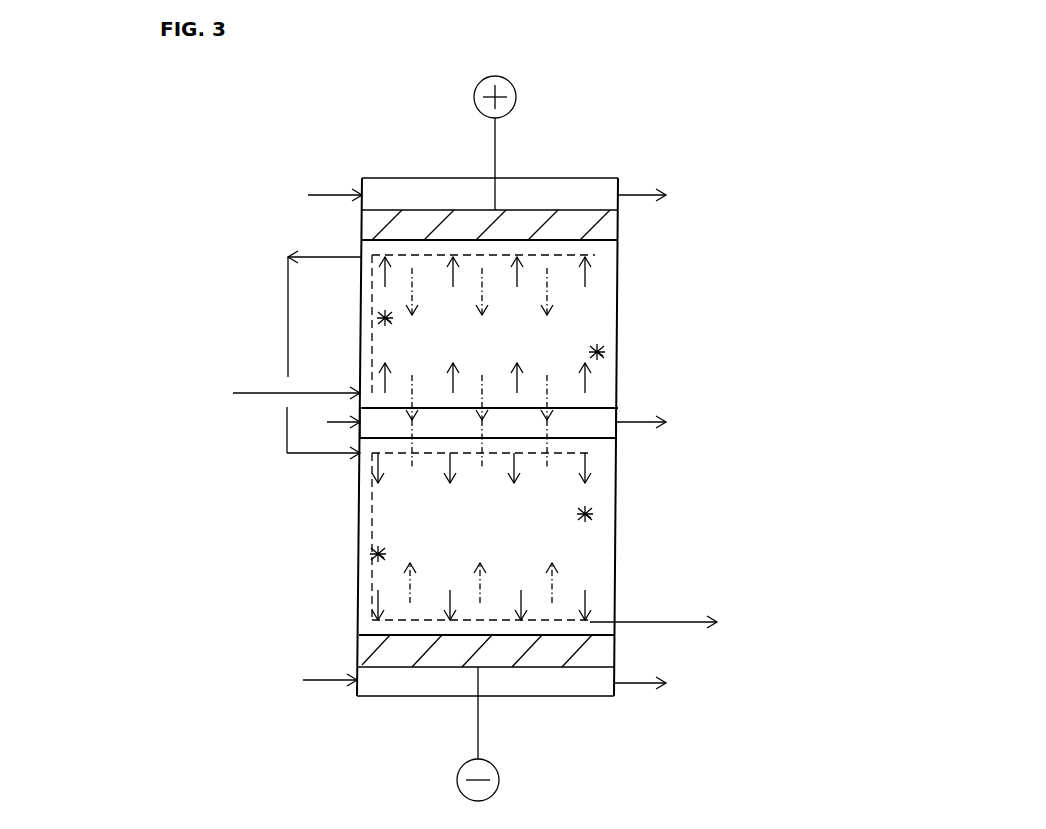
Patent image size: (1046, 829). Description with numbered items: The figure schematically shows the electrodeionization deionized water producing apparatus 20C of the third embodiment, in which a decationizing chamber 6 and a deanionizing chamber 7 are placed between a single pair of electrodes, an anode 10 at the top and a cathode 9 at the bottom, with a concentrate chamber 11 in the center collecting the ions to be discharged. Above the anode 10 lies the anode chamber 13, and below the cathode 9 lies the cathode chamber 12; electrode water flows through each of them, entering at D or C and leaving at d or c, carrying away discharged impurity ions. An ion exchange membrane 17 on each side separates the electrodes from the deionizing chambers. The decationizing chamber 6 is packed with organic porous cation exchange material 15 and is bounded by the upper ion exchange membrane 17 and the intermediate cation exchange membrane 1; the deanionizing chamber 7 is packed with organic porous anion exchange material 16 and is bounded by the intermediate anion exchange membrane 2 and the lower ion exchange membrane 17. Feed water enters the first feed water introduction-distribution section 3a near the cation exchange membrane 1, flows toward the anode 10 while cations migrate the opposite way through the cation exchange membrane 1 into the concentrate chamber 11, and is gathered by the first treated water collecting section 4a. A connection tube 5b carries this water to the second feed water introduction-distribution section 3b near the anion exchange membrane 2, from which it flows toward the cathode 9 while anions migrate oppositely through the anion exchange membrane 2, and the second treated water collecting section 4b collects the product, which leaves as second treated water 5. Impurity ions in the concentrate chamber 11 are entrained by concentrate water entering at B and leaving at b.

The electrodeionization deionized water producing apparatus 20C is at (591, 141).
The anode chamber 13 is at (395, 191).
The anode 10 is at (620, 227).
The ion exchange membrane 17 is at (605, 243).
The decationizing chamber 6 is at (603, 303).
The organic porous cation exchange material 15 is at (603, 333).
The first treated water collecting section 4a is at (404, 257).
The first feed water introduction-distribution section 3a is at (402, 393).
The intermediate cation exchange membrane 1 is at (593, 407).
The concentrate chamber 11 is at (617, 417).
The intermediate anion exchange membrane 2 is at (600, 440).
The connection tube 5b is at (287, 428).
The deanionizing chamber 7 is at (595, 497).
The organic porous anion exchange material 16 is at (590, 547).
The second feed water introduction-distribution section 3b is at (400, 455).
The second treated water collecting section 4b is at (565, 620).
The second treated water outlet 5 is at (688, 625).
The cathode 9 is at (358, 650).
The cathode chamber 12 is at (422, 688).